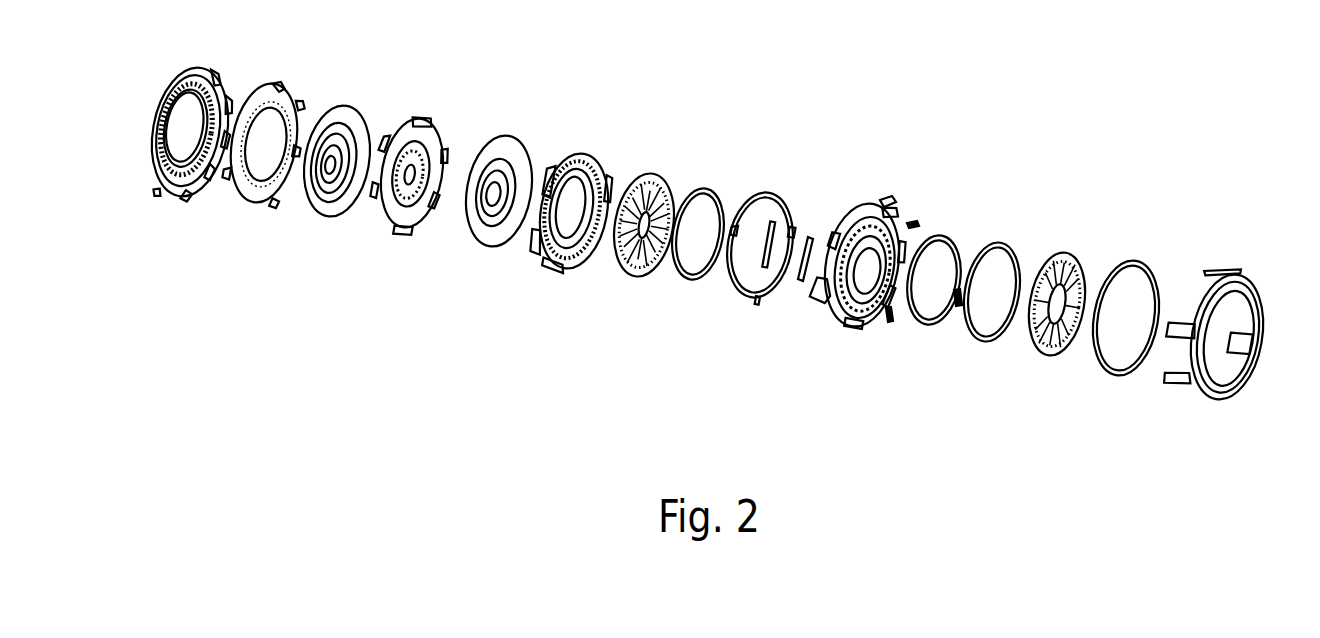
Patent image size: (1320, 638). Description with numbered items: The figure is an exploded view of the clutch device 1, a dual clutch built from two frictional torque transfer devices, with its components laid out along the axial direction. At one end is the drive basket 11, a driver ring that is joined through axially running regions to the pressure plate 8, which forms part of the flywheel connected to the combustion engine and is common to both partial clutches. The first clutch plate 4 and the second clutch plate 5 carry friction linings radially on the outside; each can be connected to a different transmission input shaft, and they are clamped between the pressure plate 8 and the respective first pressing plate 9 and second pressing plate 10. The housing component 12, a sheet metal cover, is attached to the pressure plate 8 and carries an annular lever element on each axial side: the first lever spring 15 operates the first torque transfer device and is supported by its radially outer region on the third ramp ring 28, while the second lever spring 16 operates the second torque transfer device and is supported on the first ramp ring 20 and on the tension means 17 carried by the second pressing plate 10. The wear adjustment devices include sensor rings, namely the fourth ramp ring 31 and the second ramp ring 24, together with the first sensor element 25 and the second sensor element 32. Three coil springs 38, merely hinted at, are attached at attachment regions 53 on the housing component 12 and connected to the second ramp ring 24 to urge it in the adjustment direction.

The clutch device 1 is at (802, 114).
The drive basket 11 is at (167, 193).
The second pressing plate 10 is at (258, 200).
The second clutch plate 5 is at (333, 210).
The pressure plate 8 is at (395, 217).
The first clutch plate 4 is at (485, 245).
The first pressing plate 9 is at (557, 270).
The first lever spring 15 is at (628, 275).
The fourth ramp ring 31 is at (677, 275).
The third ramp ring 28 is at (740, 297).
The second sensor element 32 is at (810, 237).
The housing component 12 is at (830, 318).
The attachment region 53 is at (887, 202).
The coil spring 38 is at (917, 228).
The first ramp ring 20 is at (908, 323).
The second ramp ring 24 is at (972, 333).
The second lever spring 16 is at (1037, 353).
The first sensor element 25 is at (1095, 370).
The tension means 17 is at (1212, 397).